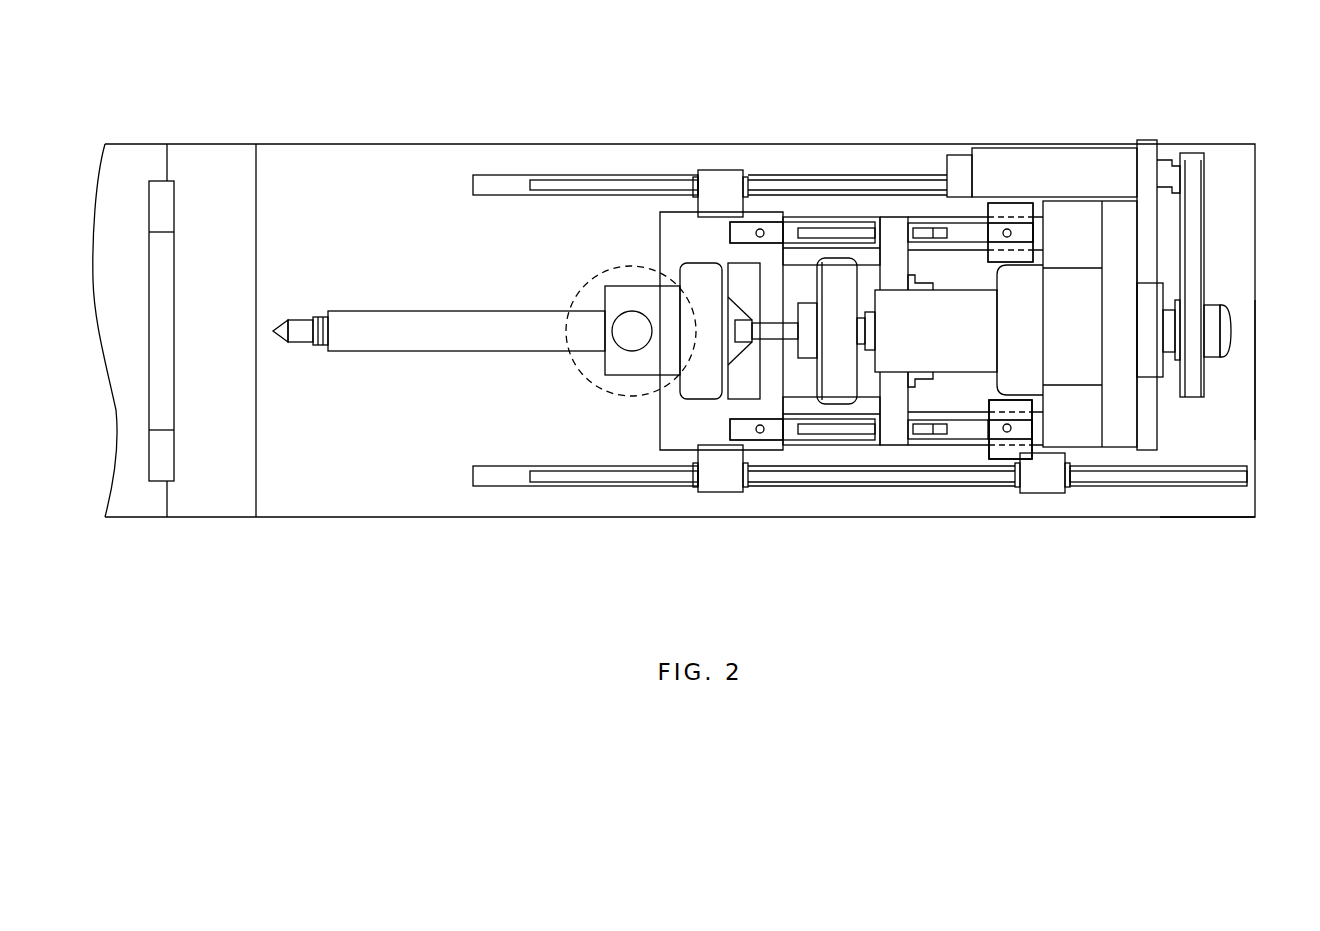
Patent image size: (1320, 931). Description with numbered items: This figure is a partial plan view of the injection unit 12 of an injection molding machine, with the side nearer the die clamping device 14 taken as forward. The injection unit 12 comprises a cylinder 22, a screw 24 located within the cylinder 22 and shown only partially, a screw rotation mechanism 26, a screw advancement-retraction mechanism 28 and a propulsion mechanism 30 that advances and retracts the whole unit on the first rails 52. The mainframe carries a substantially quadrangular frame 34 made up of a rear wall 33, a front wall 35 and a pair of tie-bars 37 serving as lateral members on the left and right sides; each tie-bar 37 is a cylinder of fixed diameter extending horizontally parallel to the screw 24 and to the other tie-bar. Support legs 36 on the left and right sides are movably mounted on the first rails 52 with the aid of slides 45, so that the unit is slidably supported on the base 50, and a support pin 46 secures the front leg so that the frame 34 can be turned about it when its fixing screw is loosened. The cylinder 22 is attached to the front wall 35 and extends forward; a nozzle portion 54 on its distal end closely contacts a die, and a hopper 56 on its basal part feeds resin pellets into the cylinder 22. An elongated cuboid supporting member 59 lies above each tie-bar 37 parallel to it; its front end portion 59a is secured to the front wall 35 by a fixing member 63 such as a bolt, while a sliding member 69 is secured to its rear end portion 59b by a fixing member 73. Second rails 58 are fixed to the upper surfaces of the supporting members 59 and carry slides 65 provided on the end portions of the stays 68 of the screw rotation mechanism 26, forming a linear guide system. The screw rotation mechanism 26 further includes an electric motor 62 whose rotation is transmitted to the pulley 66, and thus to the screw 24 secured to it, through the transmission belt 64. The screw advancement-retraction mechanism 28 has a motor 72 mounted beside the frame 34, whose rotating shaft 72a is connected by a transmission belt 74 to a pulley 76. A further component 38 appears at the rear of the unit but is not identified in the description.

The injection unit 12 is at (1047, 94).
The die clamping device 14 is at (217, 114).
The cylinder 22 is at (378, 344).
The screw 24 is at (778, 340).
The screw rotation mechanism 26 is at (941, 269).
The screw advancement-retraction mechanism 28 is at (1254, 245).
The propulsion mechanism 30 is at (1255, 367).
The rear wall 33 is at (1132, 430).
The frame 34 is at (639, 440).
The front wall 35 is at (668, 400).
The support legs 36 is at (722, 180).
The tie-bars 37 is at (790, 217).
The handle 38 is at (1226, 316).
The slides 45 is at (1005, 460).
The support pin 46 is at (742, 318).
The base 50 is at (1240, 445).
The first rails 52 is at (617, 185).
The nozzle portion 54 is at (300, 334).
The hopper 56 is at (577, 296).
The second rails 58 is at (833, 228).
The supporting member 59 is at (964, 237).
The front end portion of supporting member 59a is at (755, 229).
The rear end portion of supporting member 59b is at (997, 230).
The electric motor 62 is at (963, 362).
The fixing member 63 is at (740, 233).
The transmission belt 64 is at (858, 350).
The slide 65 is at (866, 220).
The pulley 66 is at (806, 310).
The stays 68 is at (895, 223).
The sliding member 69 is at (1013, 215).
The motor 72 is at (1070, 230).
The rotating shaft 72a is at (1165, 168).
The fixing member 73 is at (1035, 222).
The transmission belt 74 is at (1197, 210).
The pulley 76 is at (1206, 345).